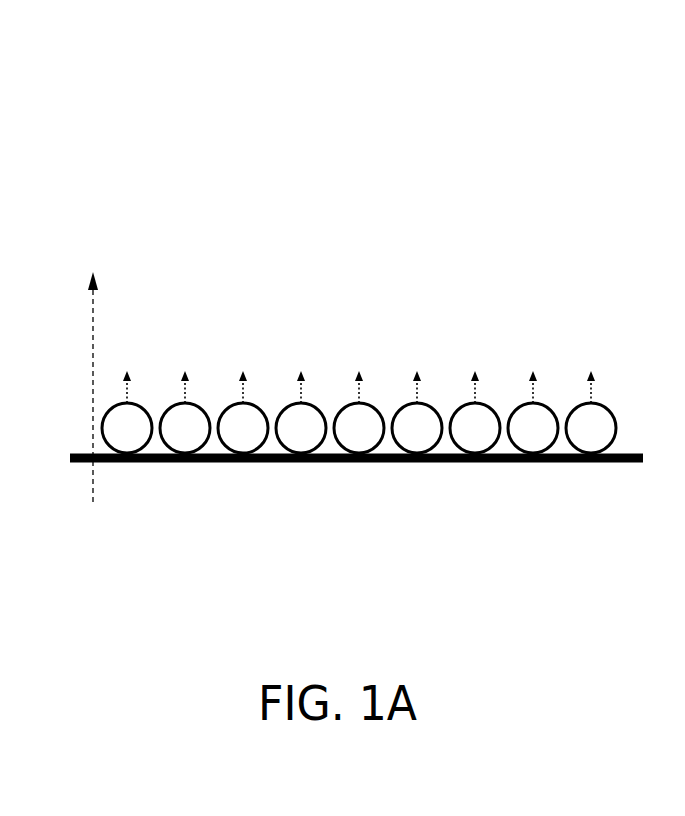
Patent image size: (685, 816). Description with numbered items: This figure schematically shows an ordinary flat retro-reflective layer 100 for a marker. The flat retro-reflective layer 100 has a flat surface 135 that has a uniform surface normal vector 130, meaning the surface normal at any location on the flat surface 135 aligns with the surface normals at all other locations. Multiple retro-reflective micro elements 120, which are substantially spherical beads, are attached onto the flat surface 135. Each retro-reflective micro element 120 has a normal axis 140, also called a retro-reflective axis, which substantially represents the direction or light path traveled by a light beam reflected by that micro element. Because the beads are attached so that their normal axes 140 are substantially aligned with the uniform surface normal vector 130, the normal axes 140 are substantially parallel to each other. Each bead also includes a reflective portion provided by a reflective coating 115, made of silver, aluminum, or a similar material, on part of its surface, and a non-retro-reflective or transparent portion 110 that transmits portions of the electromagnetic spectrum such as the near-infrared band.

The flat retro-reflective layer 100 is at (285, 137).
The transparent portion 110 is at (632, 463).
The reflective coating 115 is at (596, 425).
The retro-reflective micro element 120 is at (662, 518).
The surface normal vector 130 is at (92, 402).
The flat surface 135 is at (70, 462).
The normal axis 140 is at (540, 388).